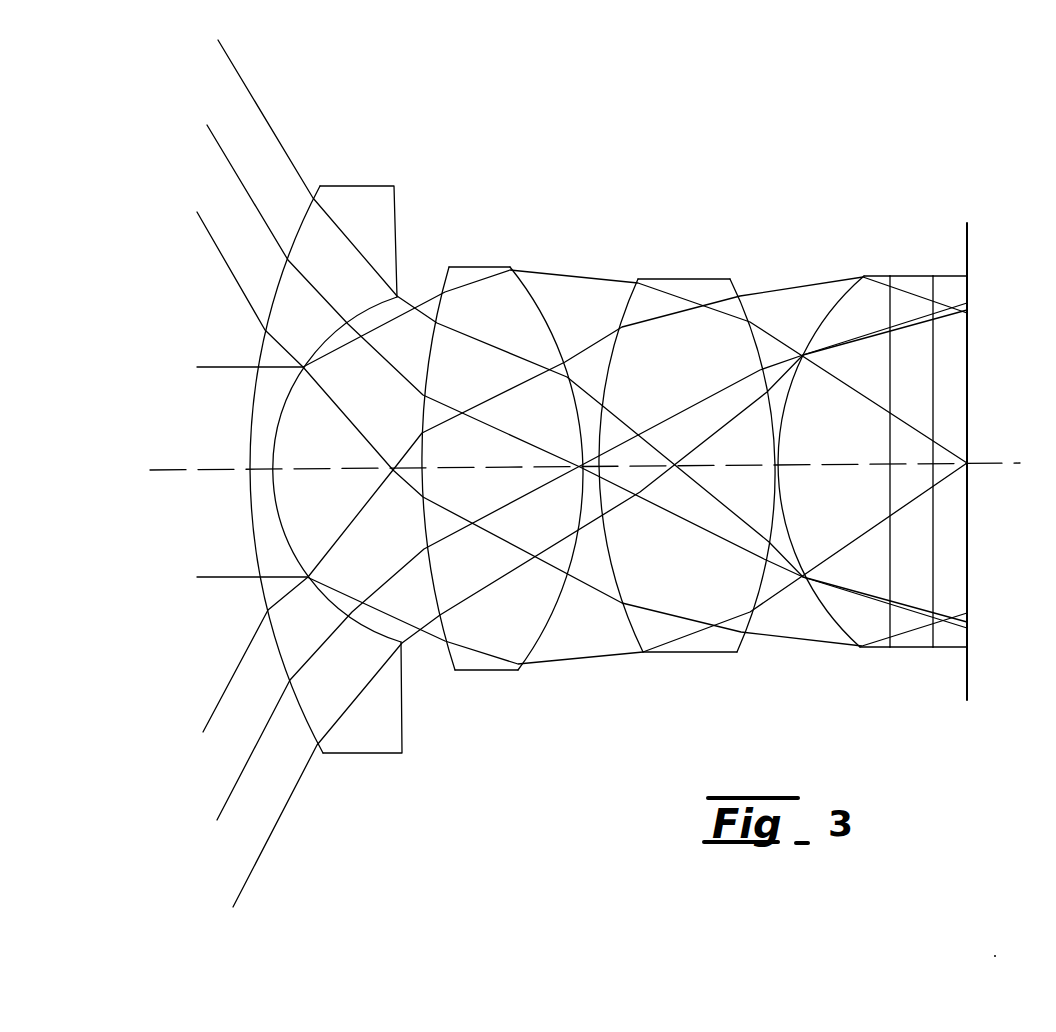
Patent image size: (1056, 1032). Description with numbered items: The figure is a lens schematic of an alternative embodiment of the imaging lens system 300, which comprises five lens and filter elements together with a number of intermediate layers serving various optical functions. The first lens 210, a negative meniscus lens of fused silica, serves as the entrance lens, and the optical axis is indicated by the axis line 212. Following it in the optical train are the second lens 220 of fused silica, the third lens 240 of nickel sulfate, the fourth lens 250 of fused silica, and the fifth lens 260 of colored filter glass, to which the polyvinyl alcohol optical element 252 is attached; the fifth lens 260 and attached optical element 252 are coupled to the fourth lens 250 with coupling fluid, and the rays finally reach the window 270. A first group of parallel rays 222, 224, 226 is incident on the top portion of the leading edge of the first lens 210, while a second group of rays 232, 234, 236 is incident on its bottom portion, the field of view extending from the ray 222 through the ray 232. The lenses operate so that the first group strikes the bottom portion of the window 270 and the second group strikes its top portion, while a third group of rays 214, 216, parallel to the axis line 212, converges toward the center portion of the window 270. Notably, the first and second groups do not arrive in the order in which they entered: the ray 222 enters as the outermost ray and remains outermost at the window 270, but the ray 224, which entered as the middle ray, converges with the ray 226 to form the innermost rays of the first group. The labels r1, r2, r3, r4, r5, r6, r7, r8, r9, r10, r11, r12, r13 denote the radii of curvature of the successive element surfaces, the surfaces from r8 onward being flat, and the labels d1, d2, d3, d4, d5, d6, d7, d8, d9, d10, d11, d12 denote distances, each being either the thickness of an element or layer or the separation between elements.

The lens system 300 is at (797, 202).
The first lens 210 is at (362, 186).
The second lens 220 is at (478, 267).
The third lens 240 is at (683, 279).
The fourth lens 250 is at (822, 312).
The optical element 252 is at (888, 275).
The fifth lens 260 is at (927, 556).
The window 270 is at (962, 362).
The axis line 212 is at (181, 470).
The optical ray 214 is at (214, 365).
The optical ray 216 is at (214, 577).
The optical ray 222 is at (263, 118).
The optical ray 224 is at (254, 208).
The optical ray 226 is at (243, 292).
The optical ray 232 is at (256, 869).
The optical ray 234 is at (244, 776).
The optical ray 236 is at (246, 652).
The thickness d1 is at (270, 469).
The separation d2 is at (338, 470).
The thickness d3 is at (498, 468).
The separation d4 is at (596, 467).
The thickness d5 is at (710, 466).
The separation d6 is at (778, 464).
The thickness d7 is at (800, 467).
The thickness d8 is at (890, 275).
The thickness d9 is at (890, 462).
The thickness d10 is at (912, 468).
The thickness d11 is at (937, 458).
The thickness d12 is at (947, 458).
The radius of curvature r1 is at (318, 755).
The radius of curvature r2 is at (355, 622).
The radius of curvature r3 is at (455, 672).
The radius of curvature r4 is at (518, 672).
The radius of curvature r5 is at (643, 654).
The radius of curvature r6 is at (739, 654).
The radius of curvature r7 is at (858, 650).
The radius of curvature r8 is at (890, 650).
The radius of curvature r9 is at (933, 650).
The radius of curvature r10 is at (932, 280).
The radius of curvature r11 is at (964, 287).
The radius of curvature r12 is at (965, 695).
The radius of curvature r13 is at (972, 665).